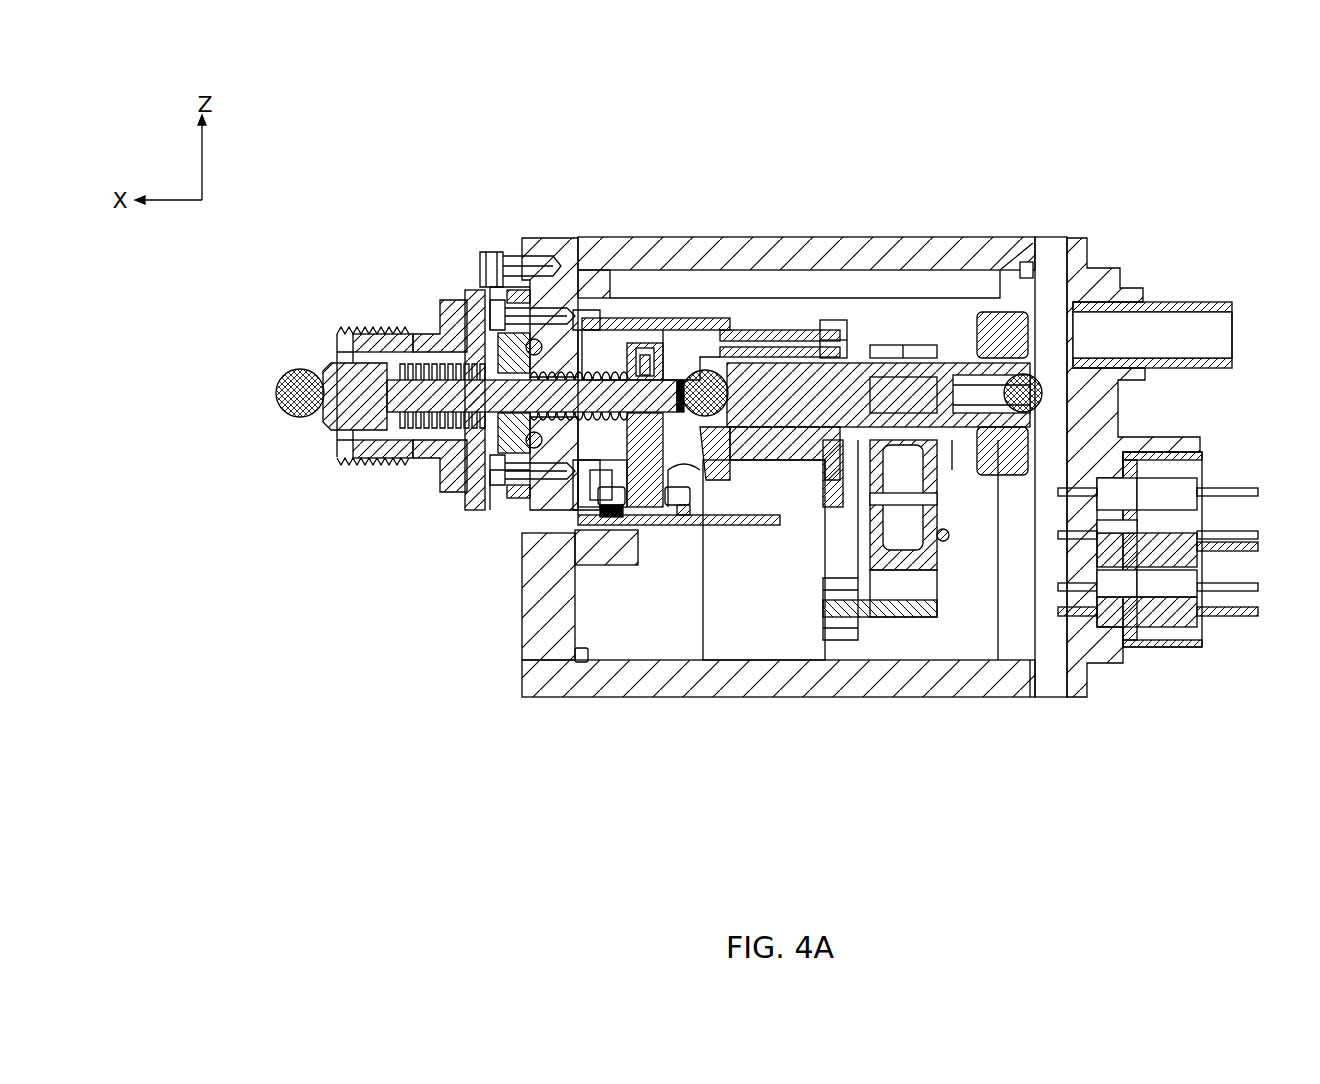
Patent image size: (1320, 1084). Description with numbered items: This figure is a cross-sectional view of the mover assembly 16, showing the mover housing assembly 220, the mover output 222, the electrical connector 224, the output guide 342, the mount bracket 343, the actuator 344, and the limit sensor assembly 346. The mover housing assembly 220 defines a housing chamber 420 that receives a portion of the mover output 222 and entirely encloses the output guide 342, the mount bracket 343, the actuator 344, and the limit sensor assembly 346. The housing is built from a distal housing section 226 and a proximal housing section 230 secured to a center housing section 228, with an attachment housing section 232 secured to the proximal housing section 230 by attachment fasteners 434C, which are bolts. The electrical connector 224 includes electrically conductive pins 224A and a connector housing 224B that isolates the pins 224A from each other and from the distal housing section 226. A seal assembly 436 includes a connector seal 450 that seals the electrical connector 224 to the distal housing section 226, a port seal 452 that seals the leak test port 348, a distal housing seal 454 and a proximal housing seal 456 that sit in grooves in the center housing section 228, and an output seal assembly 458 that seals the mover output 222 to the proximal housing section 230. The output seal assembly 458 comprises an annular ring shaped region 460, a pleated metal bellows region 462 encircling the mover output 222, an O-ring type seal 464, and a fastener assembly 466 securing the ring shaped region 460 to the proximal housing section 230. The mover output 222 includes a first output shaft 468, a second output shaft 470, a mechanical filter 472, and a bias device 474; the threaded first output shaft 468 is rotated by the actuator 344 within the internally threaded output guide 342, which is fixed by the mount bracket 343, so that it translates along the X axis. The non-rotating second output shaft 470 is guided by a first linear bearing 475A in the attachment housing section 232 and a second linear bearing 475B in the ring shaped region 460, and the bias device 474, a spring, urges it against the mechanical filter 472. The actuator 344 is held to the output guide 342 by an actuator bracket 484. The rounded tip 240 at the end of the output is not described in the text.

The mover assembly 16 is at (792, 198).
The mover housing assembly 220 is at (694, 230).
The mover output 222 is at (318, 357).
The electrical connector 224 is at (1166, 452).
The electrical pins 224A is at (1148, 645).
The connector housing 224B is at (1127, 630).
The distal housing section 226 is at (1069, 254).
The center housing section 228 is at (990, 240).
The proximal housing section 230 is at (577, 243).
The attachment housing section 232 is at (466, 318).
The ball tip 240 is at (292, 394).
The output guide 342 is at (770, 330).
The mount bracket 343 is at (650, 320).
The actuator 344 is at (917, 350).
The limit sensor assembly 346 is at (606, 518).
The leak test port 348 is at (1163, 330).
The housing chamber 420 is at (828, 288).
The attachment fasteners 434C is at (478, 258).
The seal assembly 436 is at (540, 250).
The connector seal 450 is at (1168, 624).
The port seal 452 is at (1136, 300).
The distal housing seal 454 is at (1022, 262).
The proximal housing seal 456 is at (582, 663).
The output seal assembly 458 is at (522, 444).
The ring shaped region 460 is at (603, 418).
The bellows region 462 is at (387, 434).
The O-ring type seal 464 is at (500, 450).
The fastener assembly 466 is at (495, 475).
The first output shaft 468 is at (856, 356).
The second output shaft 470 is at (340, 413).
The mechanical filter 472 is at (703, 402).
The bias device 474 is at (580, 521).
The first linear bearing 475A is at (356, 330).
The second linear bearing 475B is at (489, 366).
The actuator bracket 484 is at (825, 576).